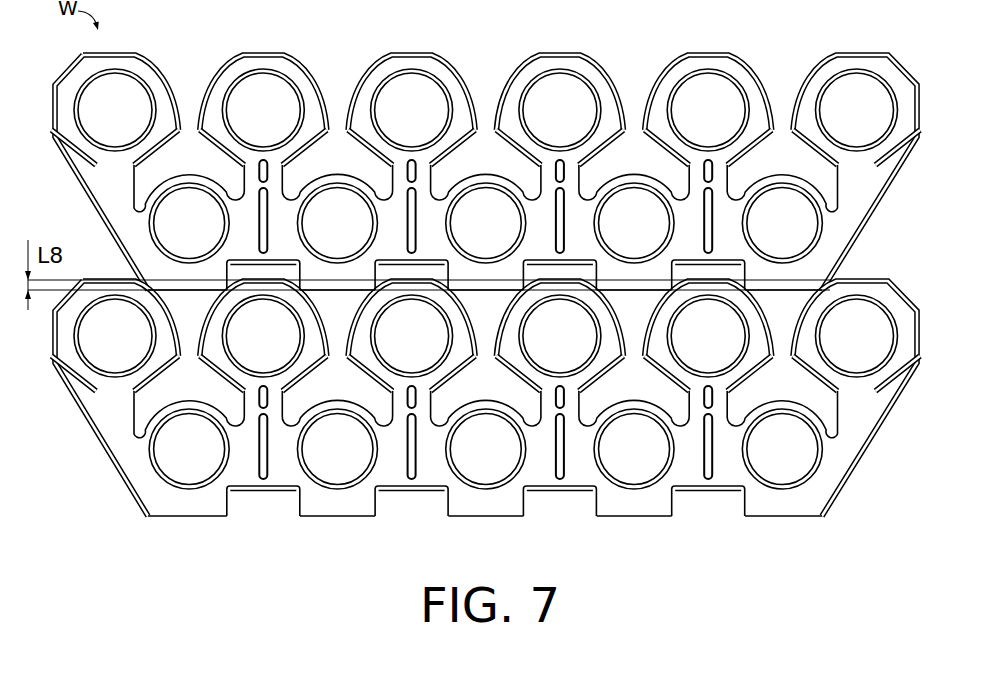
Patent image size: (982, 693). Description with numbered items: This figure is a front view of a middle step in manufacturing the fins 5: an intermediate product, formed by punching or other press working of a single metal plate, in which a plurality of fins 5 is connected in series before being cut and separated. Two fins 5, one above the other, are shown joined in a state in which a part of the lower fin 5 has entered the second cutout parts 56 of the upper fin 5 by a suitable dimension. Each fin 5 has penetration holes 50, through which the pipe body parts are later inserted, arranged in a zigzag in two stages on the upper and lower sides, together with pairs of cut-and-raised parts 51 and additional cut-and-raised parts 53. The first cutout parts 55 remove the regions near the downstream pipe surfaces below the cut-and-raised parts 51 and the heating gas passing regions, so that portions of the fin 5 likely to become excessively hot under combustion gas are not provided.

The fin 5 is at (467, 287).
The penetration hole 50 is at (259, 92).
The pair of cut-and-raised parts 51 is at (436, 152).
The additional cut-and-raised part 53 is at (401, 267).
The first cutout part 55 is at (829, 183).
The second cutout part 56 is at (271, 266).